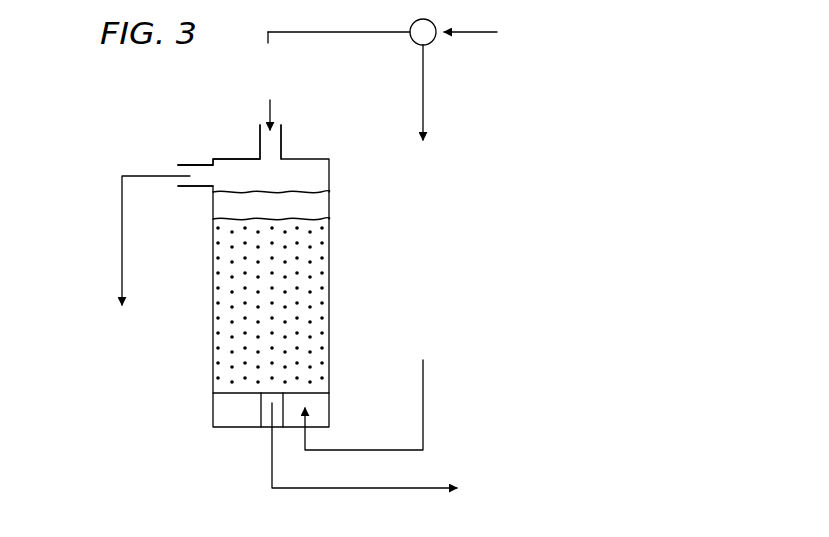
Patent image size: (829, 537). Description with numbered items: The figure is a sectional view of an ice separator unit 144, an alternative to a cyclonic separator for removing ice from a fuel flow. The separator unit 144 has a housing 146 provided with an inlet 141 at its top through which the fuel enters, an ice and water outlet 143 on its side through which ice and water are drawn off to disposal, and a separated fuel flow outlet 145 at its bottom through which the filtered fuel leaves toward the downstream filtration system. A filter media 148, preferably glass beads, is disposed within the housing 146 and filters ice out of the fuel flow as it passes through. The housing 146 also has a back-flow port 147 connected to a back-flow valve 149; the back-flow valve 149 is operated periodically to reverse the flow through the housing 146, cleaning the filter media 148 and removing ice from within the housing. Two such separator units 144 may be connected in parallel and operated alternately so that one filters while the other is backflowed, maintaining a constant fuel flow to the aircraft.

The inlet 141 is at (281, 142).
The ice and water outlet 143 is at (211, 188).
The ice separator unit 144 is at (226, 148).
The separated fuel flow outlet 145 is at (268, 424).
The housing 146 is at (329, 170).
The back-flow port 147 is at (317, 452).
The filter media 148 is at (310, 273).
The back-flow valve 149 is at (431, 43).